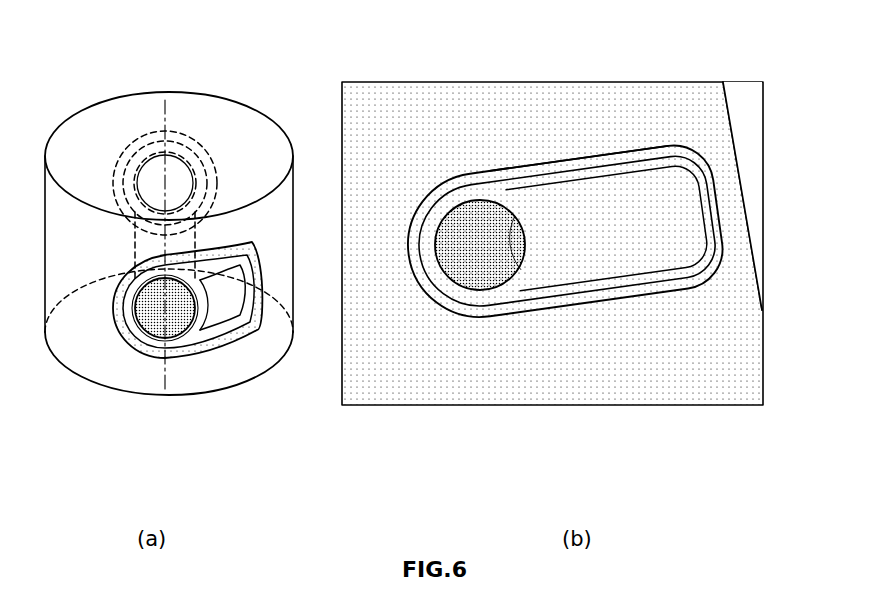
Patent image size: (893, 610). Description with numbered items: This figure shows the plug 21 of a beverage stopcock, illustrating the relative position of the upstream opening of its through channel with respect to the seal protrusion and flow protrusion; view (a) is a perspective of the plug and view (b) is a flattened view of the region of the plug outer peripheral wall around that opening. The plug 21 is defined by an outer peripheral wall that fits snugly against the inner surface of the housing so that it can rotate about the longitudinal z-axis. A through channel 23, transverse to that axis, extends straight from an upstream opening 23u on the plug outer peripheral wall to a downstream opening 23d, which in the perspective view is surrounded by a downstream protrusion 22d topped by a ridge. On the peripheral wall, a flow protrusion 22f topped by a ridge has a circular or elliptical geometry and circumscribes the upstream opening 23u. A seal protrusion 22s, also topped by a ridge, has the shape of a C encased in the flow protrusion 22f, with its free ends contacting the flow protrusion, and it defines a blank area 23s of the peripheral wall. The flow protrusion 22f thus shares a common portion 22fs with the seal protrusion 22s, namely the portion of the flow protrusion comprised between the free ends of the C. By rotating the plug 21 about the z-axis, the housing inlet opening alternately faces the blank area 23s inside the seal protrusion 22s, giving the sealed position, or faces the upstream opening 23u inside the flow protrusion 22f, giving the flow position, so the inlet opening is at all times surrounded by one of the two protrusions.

The plug 21 is at (96, 106).
The downstream protrusion 22d is at (193, 148).
The downstream opening 23d is at (155, 188).
The through channel 23 is at (182, 242).
The flow protrusion 22f is at (130, 340).
The upstream opening 23u is at (163, 352).
The blank area 23s is at (229, 290).
The seal protrusion 22s is at (243, 343).
The common portion 22fs is at (550, 157).